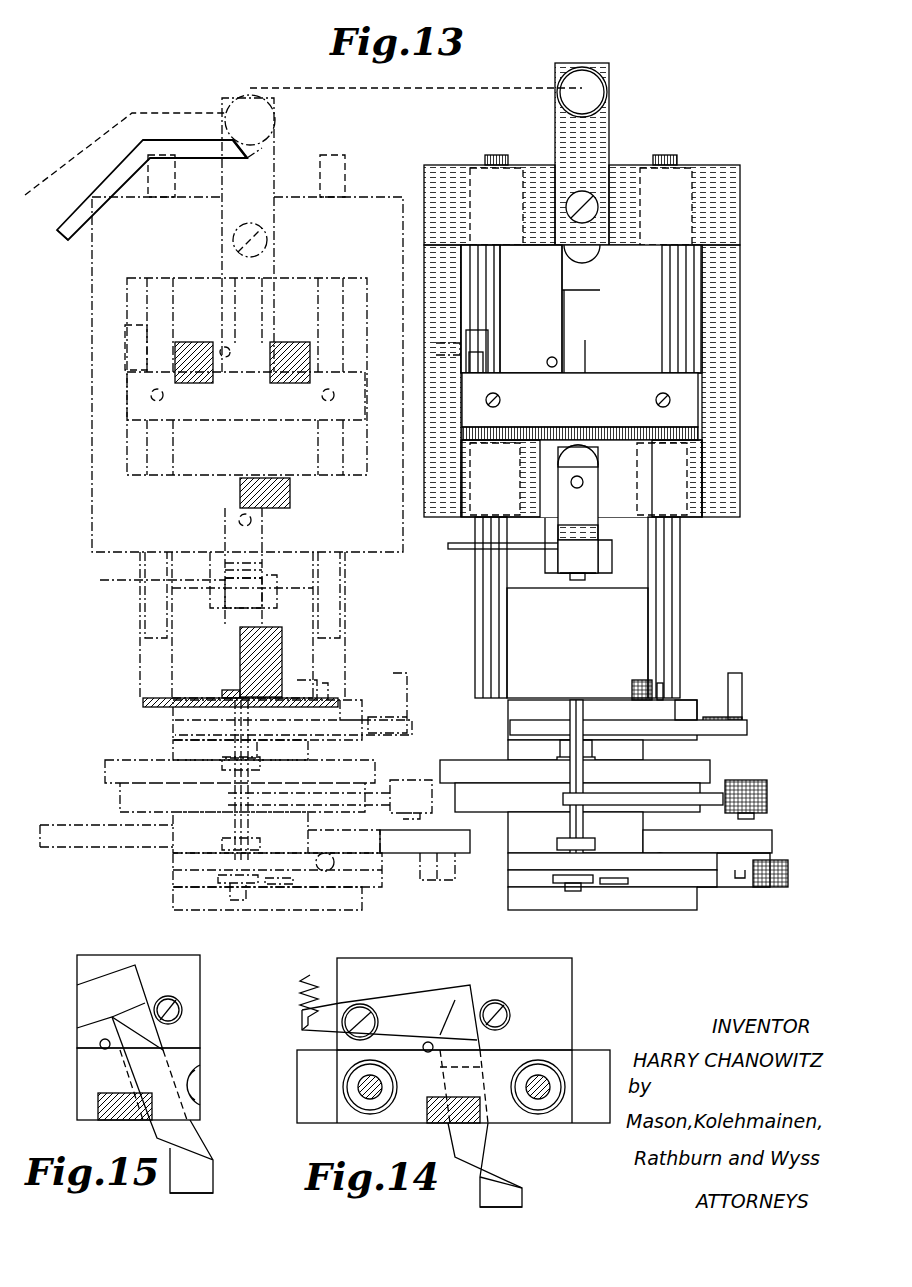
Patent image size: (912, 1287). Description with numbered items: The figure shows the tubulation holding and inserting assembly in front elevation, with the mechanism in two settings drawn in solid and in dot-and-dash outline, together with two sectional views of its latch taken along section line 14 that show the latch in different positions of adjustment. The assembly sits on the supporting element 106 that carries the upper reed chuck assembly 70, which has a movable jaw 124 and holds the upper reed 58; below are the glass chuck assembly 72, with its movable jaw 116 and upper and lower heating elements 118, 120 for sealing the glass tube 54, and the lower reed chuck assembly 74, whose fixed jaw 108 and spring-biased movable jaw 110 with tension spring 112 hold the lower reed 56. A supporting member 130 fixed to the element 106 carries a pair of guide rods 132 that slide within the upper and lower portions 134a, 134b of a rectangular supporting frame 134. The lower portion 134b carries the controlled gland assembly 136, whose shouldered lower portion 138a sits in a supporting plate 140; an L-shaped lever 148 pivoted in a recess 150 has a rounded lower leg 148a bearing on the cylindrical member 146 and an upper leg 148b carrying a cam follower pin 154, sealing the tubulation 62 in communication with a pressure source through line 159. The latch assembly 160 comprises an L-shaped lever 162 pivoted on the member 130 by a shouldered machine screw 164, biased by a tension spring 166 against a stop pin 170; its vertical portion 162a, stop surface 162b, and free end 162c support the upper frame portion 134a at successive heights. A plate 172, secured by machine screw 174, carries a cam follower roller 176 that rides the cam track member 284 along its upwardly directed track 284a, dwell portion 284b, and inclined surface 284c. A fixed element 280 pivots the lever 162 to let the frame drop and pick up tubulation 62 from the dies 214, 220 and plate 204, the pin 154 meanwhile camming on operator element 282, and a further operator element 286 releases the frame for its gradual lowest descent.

In FIG. 13, the section line 14— 14 is at (91, 179).
In FIG. 13, the glass housing or tube 54 is at (570, 830).
In FIG. 13, the magnetic reed 56 is at (573, 905).
In FIG. 13, the second magnetic reed or contact element 58 is at (572, 750).
In FIG. 13, the tubulation 62 is at (240, 632).
In FIG. 13, the upper reed chuck assembly 70 is at (495, 722).
In FIG. 13, the glass chuck assembly 72 is at (815, 785).
In FIG. 13, the lower reed chuck assembly 74 is at (485, 902).
In FIG. 13, the supporting element 106 is at (682, 542).
In FIG. 13, the fixed jaw 108 is at (645, 905).
In FIG. 13, the movable jaw 110 is at (762, 888).
In FIG. 13, the tension spring 112 is at (662, 853).
In FIG. 13, the movable jaw 116 is at (768, 800).
In FIG. 13, the upper heating element 118 is at (596, 763).
In FIG. 13, the lower heating element 120 is at (582, 840).
In FIG. 13, the movable jaw 124 is at (742, 720).
In FIG. 13, the supporting member 130 is at (690, 390).
In FIG. 13, the guide rods 132 is at (498, 155).
In FIG. 14, the guide rods 132 is at (355, 1085).
In FIG. 13, the supporting frame 134 is at (742, 308).
In FIG. 14, the supporting frame 134 is at (300, 1093).
In FIG. 13, the upper portion of frame 134a is at (626, 165).
In FIG. 15, the upper portion of frame 134a is at (85, 1078).
In FIG. 14, the upper portion of frame 134a is at (388, 1118).
In FIG. 13, the lower portion of frame 134b is at (620, 395).
In FIG. 13, the controlled gland assembly 136 is at (612, 552).
In FIG. 13, the shouldered lower portion 138a is at (570, 585).
In FIG. 13, the supporting plate 140 is at (568, 578).
In FIG. 13, the cylindrical member 146 is at (562, 556).
In FIG. 13, the L-shaped lever 148 is at (562, 495).
In FIG. 13, the rounded lower leg 148a is at (578, 528).
In FIG. 13, the upper leg 148b is at (567, 468).
In FIG. 13, the recess 150 is at (577, 448).
In FIG. 13, the cam follower pin 154 is at (585, 481).
In FIG. 13, the line 159 is at (448, 544).
In FIG. 15, the latch assembly 160 is at (220, 1151).
In FIG. 14, the latch assembly 160 is at (523, 1173).
In FIG. 13, the L-shaped lever 162 is at (520, 328).
In FIG. 15, the L-shaped lever 162 is at (95, 988).
In FIG. 14, the L-shaped lever 162 is at (398, 1003).
In FIG. 13, the vertically extending portion 162a is at (592, 245).
In FIG. 15, the vertically extending portion 162a is at (152, 1005).
In FIG. 14, the vertically extending portion 162a is at (462, 1030).
In FIG. 13, the step or stop surface 162b is at (588, 305).
In FIG. 15, the step or stop surface 162b is at (165, 1042).
In FIG. 14, the step or stop surface 162b is at (478, 1060).
In FIG. 13, the free end 162c is at (585, 340).
In FIG. 15, the free end 162c is at (183, 1130).
In FIG. 14, the free end 162c is at (485, 1145).
In FIG. 13, the shouldered machine screw 164 is at (482, 305).
In FIG. 14, the shouldered machine screw 164 is at (360, 1005).
In FIG. 13, the tension spring 166 is at (436, 348).
In FIG. 14, the tension spring 166 is at (310, 975).
In FIG. 13, the stop pin 170 is at (552, 355).
In FIG. 15, the stop pin 170 is at (98, 1046).
In FIG. 14, the stop pin 170 is at (430, 1040).
In FIG. 13, the plate 172 is at (606, 128).
In FIG. 15, the plate 172 is at (122, 1118).
In FIG. 14, the plate 172 is at (428, 1110).
In FIG. 13, the machine screw 174 is at (566, 195).
In FIG. 13, the cam follower roller 176 is at (604, 88).
In FIG. 13, the plate 204 is at (143, 703).
In FIG. 13, the plate 214 is at (230, 698).
In FIG. 13, the plate 220 is at (302, 632).
In FIG. 13, the element 280 is at (285, 384).
In FIG. 14, the element 280 is at (480, 1203).
In FIG. 13, the operator element 282 is at (290, 493).
In FIG. 13, the cam track member 284 is at (146, 140).
In FIG. 13, the upwardly directed cam track 284a is at (250, 152).
In FIG. 13, the horizontal dwell portion 284b is at (188, 140).
In FIG. 13, the downwardly inclined surface 284c is at (57, 232).
In FIG. 13, the operator element 286 is at (195, 384).
In FIG. 15, the operator element 286 is at (185, 1193).